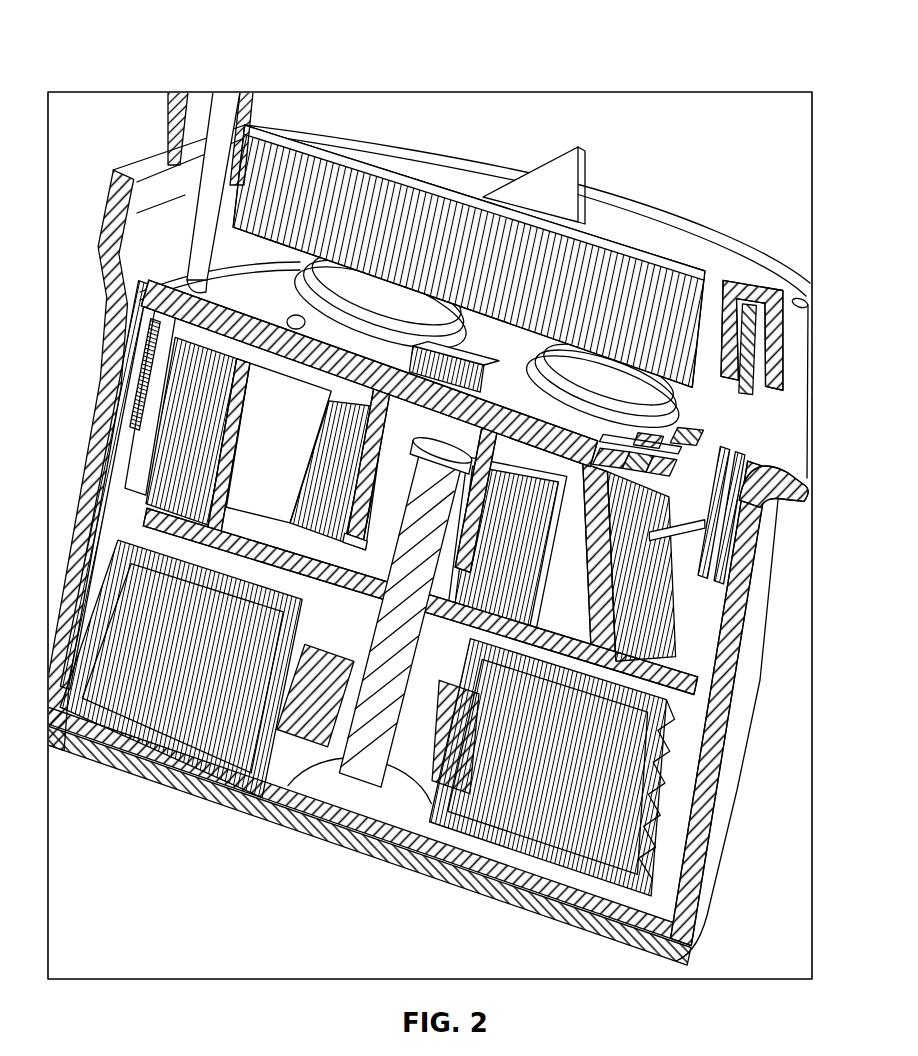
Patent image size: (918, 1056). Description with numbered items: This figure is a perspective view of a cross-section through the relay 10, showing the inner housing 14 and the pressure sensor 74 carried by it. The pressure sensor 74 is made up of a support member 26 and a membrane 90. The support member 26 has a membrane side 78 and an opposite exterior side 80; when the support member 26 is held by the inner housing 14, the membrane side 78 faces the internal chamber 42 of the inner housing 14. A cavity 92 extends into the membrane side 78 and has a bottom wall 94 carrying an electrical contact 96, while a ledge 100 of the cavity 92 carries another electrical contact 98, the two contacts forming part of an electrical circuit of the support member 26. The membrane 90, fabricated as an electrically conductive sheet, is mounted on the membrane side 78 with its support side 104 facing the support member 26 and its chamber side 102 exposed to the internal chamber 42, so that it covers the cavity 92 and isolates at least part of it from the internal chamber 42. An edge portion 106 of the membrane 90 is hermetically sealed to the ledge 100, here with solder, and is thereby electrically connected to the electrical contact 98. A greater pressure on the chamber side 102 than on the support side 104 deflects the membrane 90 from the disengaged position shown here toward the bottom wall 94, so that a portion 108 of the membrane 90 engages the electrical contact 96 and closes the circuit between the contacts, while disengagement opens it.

The relay 10 is at (606, 78).
The inner housing 14 is at (640, 936).
The support member 26 is at (204, 309).
The internal chamber 42 is at (690, 662).
The pressure sensor 74 is at (682, 437).
The membrane side 78 is at (276, 358).
The exterior side 80 is at (240, 284).
The membrane 90 is at (662, 504).
The cavity 92 is at (676, 452).
The bottom wall 94 is at (622, 444).
The electrical contact 96 is at (634, 470).
The electrical contact 98 is at (770, 513).
The ledge 100 is at (592, 463).
The chamber side 102 is at (607, 464).
The support side 104 is at (642, 457).
The edge portion 106 is at (690, 493).
The portion 108 is at (652, 542).